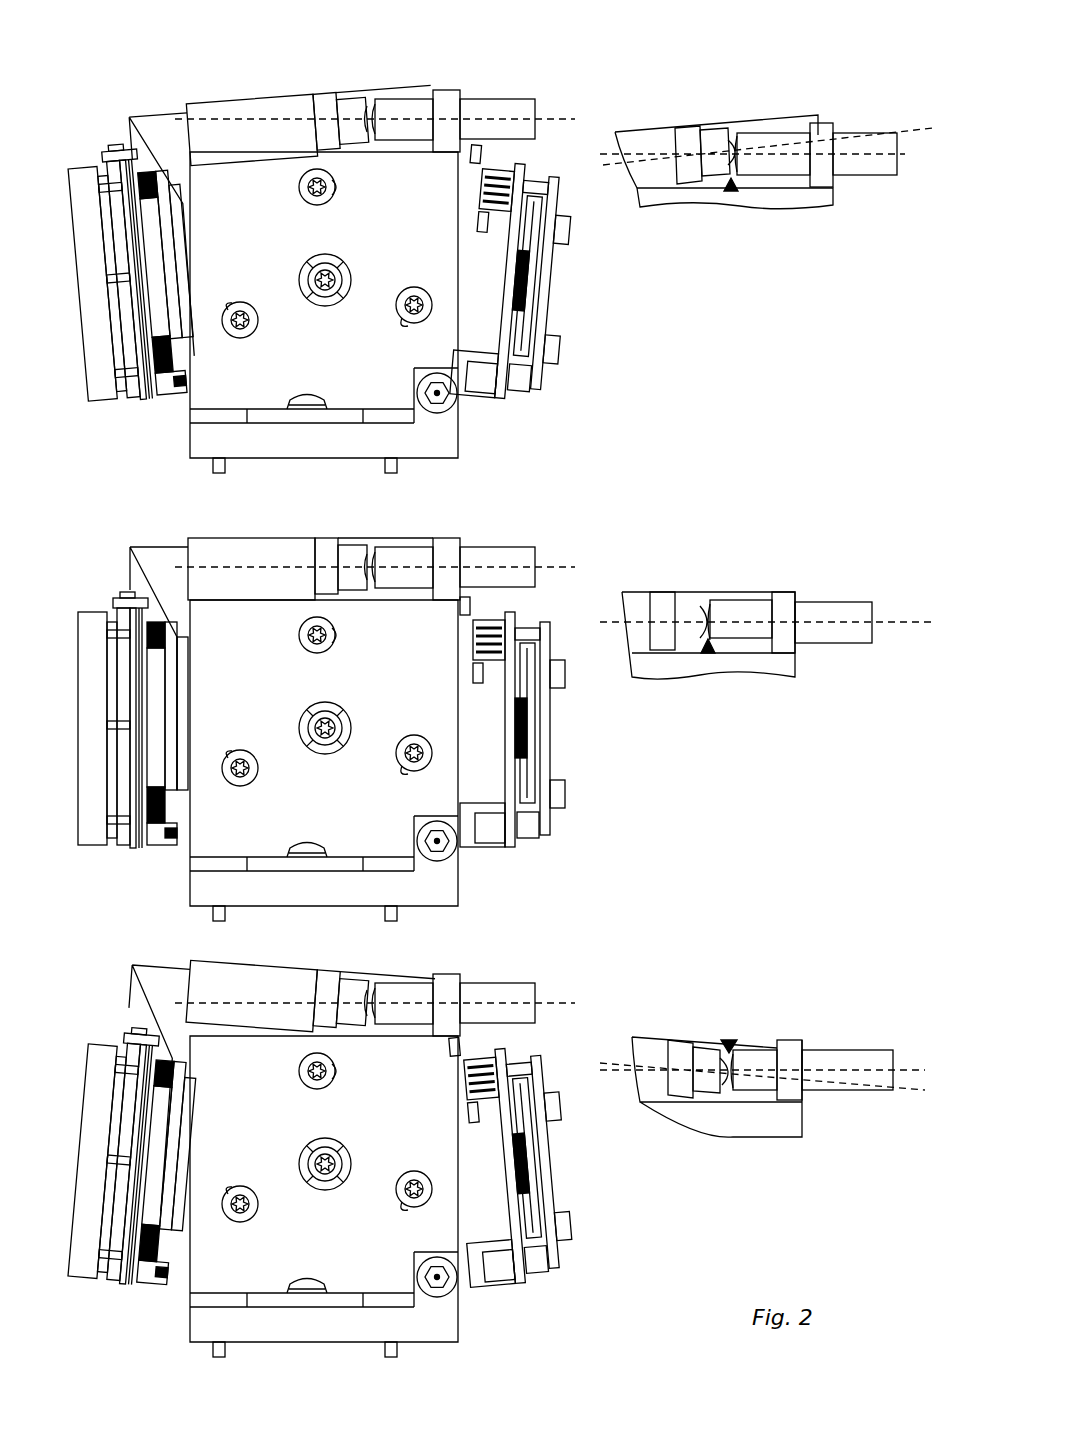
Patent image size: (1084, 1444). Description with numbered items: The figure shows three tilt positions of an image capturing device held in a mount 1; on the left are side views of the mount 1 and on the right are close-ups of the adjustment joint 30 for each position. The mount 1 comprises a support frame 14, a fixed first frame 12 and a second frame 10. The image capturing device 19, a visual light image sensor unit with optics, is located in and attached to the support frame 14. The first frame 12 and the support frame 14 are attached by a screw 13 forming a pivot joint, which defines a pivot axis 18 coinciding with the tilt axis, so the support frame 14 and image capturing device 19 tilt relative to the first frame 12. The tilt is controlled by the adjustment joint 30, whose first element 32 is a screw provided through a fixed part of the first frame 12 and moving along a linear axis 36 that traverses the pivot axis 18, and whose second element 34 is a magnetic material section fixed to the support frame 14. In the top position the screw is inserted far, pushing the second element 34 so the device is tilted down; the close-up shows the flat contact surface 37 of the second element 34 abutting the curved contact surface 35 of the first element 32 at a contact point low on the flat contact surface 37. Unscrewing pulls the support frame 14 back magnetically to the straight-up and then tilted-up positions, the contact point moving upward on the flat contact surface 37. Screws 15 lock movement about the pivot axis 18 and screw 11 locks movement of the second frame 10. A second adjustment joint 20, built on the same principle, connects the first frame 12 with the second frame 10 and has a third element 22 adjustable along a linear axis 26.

The mount 1 is at (548, 72).
The second frame 10 is at (335, 455).
The screw 11 is at (305, 395).
The first frame 12 is at (207, 180).
The screw 13 is at (336, 266).
The support frame 14 is at (415, 90).
The screws 15 is at (299, 188).
The pivot axis 18 is at (302, 268).
The image capturing device 19 is at (488, 300).
The second adjustment joint 20 is at (482, 400).
The third element 22 is at (440, 413).
The linear axis 26 is at (440, 398).
The adjustment joint 30 is at (366, 86).
The first element 32 is at (486, 100).
The second element 34 is at (333, 99).
The curved contact surface 35 is at (730, 190).
The linear axis 36 is at (232, 120).
The flat contact surface 37 is at (733, 128).